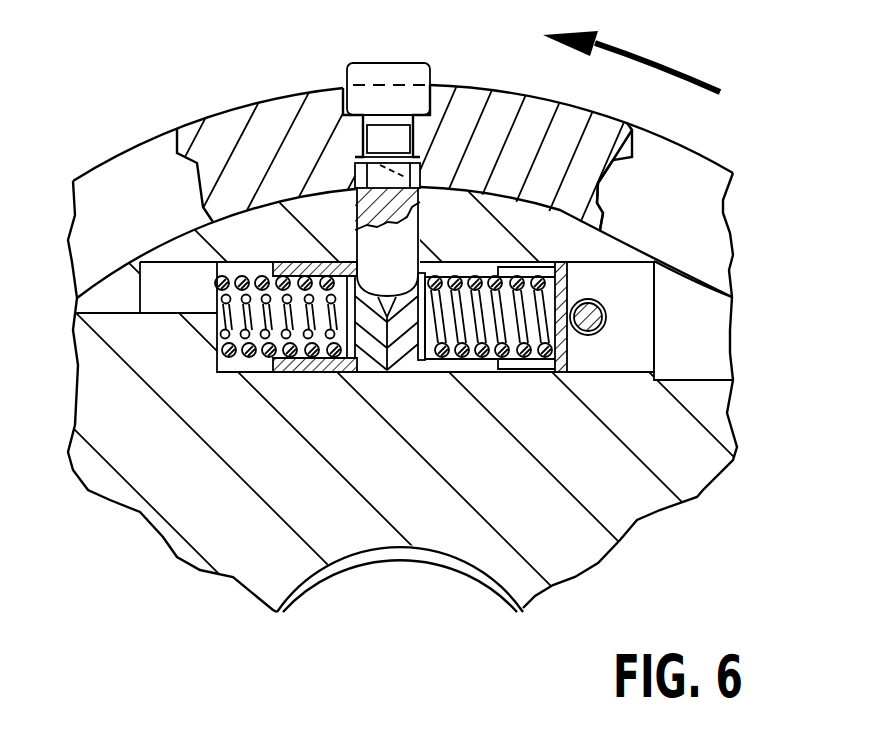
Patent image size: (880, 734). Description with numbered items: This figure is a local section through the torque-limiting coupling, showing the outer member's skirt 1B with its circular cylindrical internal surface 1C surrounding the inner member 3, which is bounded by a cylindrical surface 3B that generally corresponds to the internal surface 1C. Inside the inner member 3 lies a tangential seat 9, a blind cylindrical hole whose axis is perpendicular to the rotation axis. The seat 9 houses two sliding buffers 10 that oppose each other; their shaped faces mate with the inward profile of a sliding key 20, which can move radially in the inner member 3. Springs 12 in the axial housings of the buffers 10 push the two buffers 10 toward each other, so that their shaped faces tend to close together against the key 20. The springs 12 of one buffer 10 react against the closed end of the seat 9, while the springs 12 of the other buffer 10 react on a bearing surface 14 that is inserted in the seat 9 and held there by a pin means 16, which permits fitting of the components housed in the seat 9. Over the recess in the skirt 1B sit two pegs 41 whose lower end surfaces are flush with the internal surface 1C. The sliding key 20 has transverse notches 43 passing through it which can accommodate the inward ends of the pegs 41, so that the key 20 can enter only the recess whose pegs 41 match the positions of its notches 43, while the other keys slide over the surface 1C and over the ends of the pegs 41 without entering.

The skirt 1B is at (209, 131).
The internal surface 1C is at (733, 308).
The inner member 3 is at (300, 188).
The cylindrical surface 3B is at (633, 236).
The tangential seat 9 is at (633, 385).
The sliding buffer 10 is at (308, 373).
The spring 12 is at (528, 368).
The bearing surface 14 is at (565, 363).
The pin means 16 is at (590, 318).
The sliding key 20 is at (407, 247).
The peg 41 is at (373, 75).
The transverse notch 43 is at (352, 167).